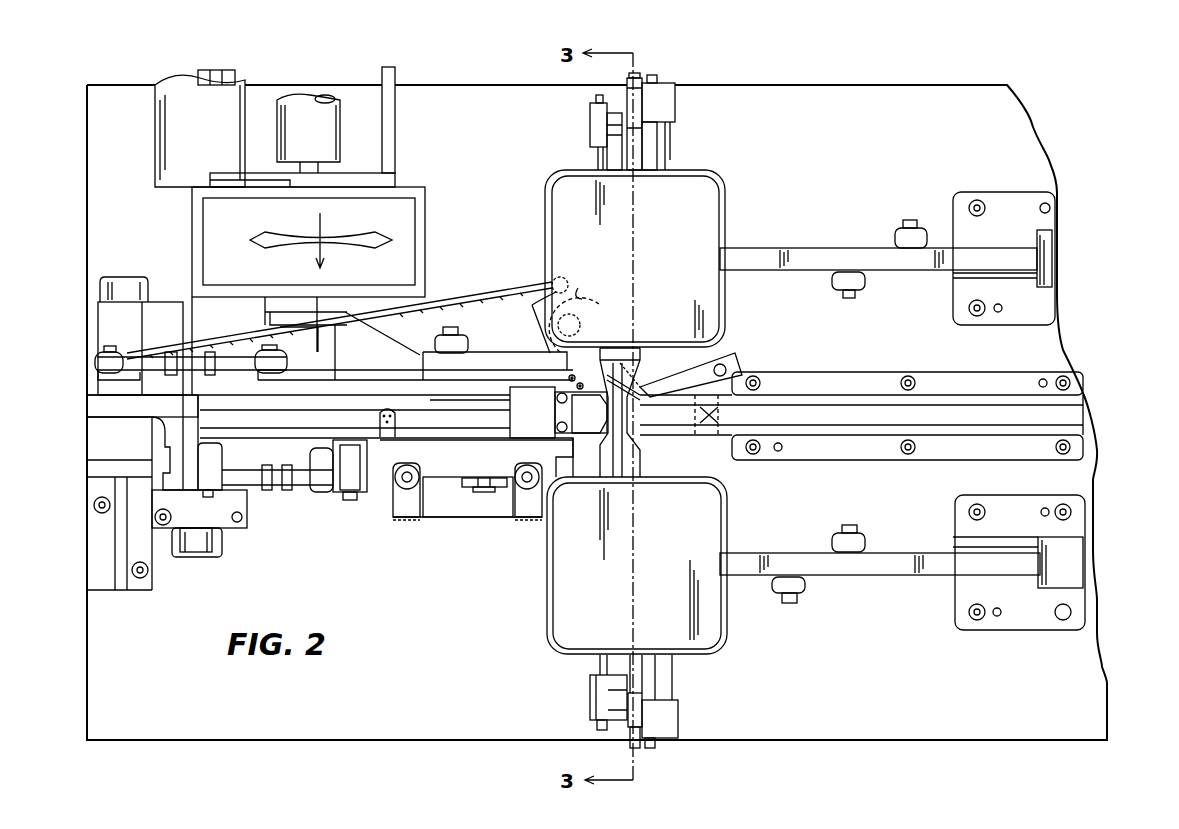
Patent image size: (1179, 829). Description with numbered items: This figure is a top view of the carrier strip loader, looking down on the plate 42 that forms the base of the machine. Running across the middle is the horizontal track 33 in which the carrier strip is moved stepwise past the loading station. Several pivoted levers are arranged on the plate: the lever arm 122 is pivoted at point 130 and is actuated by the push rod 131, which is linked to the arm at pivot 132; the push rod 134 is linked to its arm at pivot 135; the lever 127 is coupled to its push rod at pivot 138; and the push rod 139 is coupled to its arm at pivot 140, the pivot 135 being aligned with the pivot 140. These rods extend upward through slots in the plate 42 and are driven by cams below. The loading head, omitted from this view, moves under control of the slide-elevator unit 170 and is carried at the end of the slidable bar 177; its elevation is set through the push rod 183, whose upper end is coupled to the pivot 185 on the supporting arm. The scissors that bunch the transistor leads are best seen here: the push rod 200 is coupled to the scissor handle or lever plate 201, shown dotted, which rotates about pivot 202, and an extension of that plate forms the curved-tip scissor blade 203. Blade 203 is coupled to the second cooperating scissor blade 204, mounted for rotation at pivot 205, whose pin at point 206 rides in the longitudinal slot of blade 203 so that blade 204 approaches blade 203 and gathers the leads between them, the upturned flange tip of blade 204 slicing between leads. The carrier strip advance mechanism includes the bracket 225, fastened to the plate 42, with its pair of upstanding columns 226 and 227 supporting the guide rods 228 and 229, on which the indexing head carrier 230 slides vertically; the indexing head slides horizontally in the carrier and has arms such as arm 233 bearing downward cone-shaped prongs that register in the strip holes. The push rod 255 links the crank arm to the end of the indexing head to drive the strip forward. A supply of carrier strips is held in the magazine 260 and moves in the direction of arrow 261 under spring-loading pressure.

The horizontal track 33 is at (1077, 415).
The plate 42 is at (348, 738).
The lever arm 122 is at (872, 572).
The lever 127 is at (812, 247).
The pivot point 130 is at (1038, 583).
The push rod 131 is at (807, 585).
The pivot 132 is at (788, 605).
The push rod 134 is at (832, 540).
The pivot 135 is at (850, 527).
The pivot 138 is at (907, 220).
The push rod 139 is at (867, 280).
The pivot 140 is at (850, 298).
The slide-elevator unit 170 is at (380, 366).
The slidable bar 177 is at (525, 375).
The push rod 183 is at (470, 342).
The pivot 185 is at (458, 330).
The push rod 200 is at (442, 302).
The scissor handle or lever plate 201 is at (584, 291).
The pivot 202 is at (578, 320).
The scissor blade 203 is at (637, 383).
The second cooperating scissor blade 204 is at (733, 358).
The pivot 205 is at (742, 368).
The pin 206 is at (623, 358).
The bracket 225 is at (490, 517).
The upstanding column 226 is at (535, 518).
The upstanding column 227 is at (413, 518).
The guide rod 228 is at (520, 472).
The guide rod 229 is at (417, 470).
The indexing head carrier 230 is at (440, 473).
The arm 233 is at (373, 417).
The push rod 255 is at (287, 488).
The magazine 260 is at (260, 224).
The arrow 261 is at (325, 245).